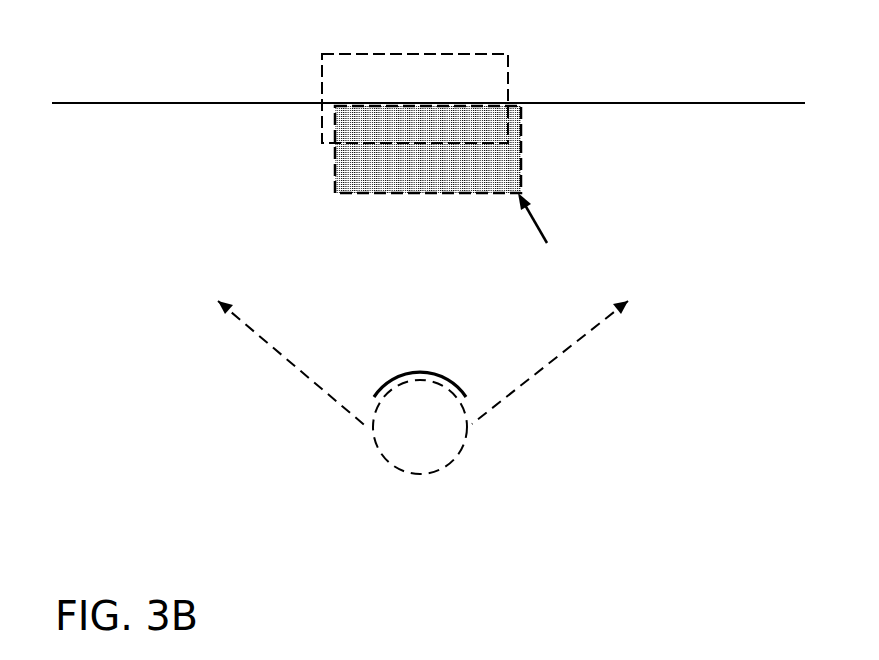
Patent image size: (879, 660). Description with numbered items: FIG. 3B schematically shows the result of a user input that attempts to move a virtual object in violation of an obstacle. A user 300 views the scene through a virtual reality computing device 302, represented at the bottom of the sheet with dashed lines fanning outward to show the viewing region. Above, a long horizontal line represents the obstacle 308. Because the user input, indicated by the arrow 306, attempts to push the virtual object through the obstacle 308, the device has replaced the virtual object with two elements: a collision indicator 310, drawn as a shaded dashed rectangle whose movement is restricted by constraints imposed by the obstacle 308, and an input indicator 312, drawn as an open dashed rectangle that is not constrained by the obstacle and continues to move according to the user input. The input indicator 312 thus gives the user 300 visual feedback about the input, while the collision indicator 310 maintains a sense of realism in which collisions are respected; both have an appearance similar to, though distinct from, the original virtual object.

The user 300 is at (439, 437).
The virtual reality computing device 302 is at (406, 373).
The arrow 306 is at (545, 238).
The obstacle 308 is at (124, 104).
The collision indicator 310 is at (343, 194).
The input indicator 312 is at (322, 82).